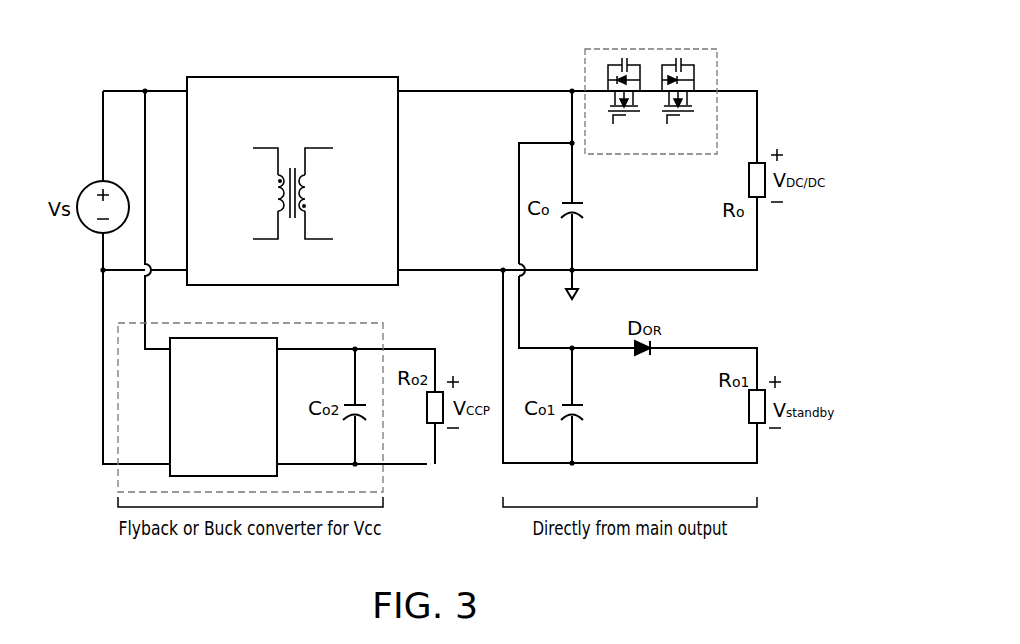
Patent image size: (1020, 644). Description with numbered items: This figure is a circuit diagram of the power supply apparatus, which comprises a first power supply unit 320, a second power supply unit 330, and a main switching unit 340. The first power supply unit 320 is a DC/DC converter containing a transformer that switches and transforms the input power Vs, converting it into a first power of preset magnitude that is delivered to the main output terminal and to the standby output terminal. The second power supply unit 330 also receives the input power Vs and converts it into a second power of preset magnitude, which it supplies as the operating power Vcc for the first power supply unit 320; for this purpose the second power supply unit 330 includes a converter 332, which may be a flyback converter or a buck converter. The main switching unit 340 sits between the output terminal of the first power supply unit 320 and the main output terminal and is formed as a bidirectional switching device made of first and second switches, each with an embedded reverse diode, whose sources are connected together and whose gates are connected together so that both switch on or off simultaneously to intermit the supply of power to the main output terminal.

The first power supply unit 320 is at (290, 77).
The second power supply unit 330 is at (118, 379).
The converter 332 is at (170, 428).
The main switching unit 340 is at (717, 65).